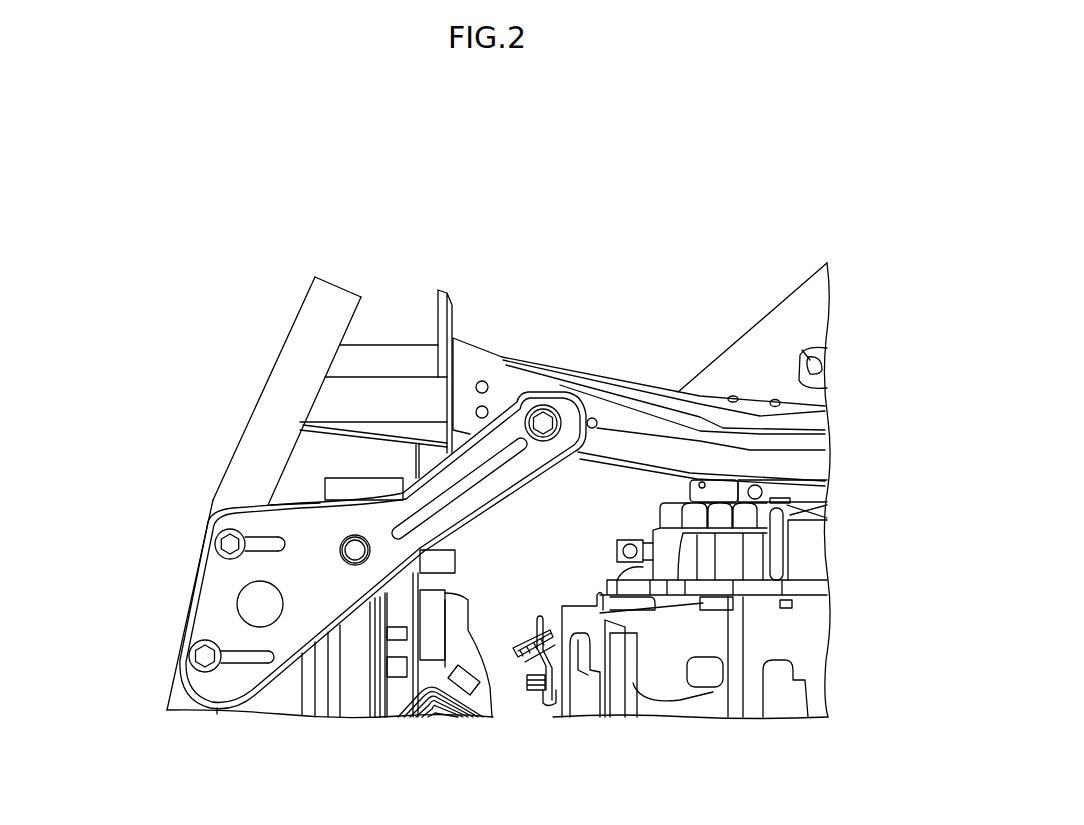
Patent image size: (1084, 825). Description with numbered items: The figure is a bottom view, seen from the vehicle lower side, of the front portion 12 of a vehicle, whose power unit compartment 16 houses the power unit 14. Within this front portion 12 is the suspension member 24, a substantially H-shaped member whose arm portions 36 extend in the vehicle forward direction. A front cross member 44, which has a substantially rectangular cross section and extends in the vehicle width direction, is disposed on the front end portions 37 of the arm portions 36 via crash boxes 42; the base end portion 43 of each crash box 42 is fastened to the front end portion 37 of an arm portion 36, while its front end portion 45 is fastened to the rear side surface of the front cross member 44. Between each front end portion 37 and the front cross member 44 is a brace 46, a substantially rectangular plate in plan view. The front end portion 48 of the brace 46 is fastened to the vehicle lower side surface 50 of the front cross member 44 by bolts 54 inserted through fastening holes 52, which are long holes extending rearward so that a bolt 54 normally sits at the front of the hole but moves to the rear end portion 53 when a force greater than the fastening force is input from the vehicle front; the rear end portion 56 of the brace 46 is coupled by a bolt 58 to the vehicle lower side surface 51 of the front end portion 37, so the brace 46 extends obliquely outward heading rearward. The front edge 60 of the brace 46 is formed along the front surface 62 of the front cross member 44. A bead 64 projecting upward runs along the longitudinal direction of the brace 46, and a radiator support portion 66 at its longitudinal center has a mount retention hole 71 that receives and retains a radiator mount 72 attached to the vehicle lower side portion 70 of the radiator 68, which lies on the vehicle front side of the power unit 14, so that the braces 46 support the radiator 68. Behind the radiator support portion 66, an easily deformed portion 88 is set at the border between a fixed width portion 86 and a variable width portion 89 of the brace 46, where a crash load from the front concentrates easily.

The front portion 12 is at (460, 166).
The power unit 14 is at (682, 703).
The power unit compartment 16 is at (520, 697).
The suspension member 24 is at (610, 398).
The arm portion 36 is at (664, 334).
The front end portion 37 is at (518, 382).
The crash box 42 is at (365, 358).
The base end portion 43 is at (433, 355).
The front cross member 44 is at (267, 391).
The front end portion 45 is at (337, 365).
The brace 46 is at (494, 436).
The front end portion 48 is at (258, 580).
The vehicle lower side surface 50 is at (247, 477).
The vehicle lower side surface 51 is at (590, 390).
The fastening hole 52 is at (260, 547).
The rear end portion 53 is at (285, 540).
The bolt 54 is at (205, 533).
The rear end portion 56 is at (568, 418).
The bolt 58 is at (540, 405).
The front edge 60 is at (180, 612).
The front surface 62 is at (167, 710).
The bead 64 is at (450, 498).
The radiator support portion 66 is at (341, 544).
The radiator 68 is at (352, 705).
The vehicle lower side portion 70 is at (357, 633).
The mount retention hole 71 is at (352, 537).
The radiator mount 72 is at (370, 549).
The fixed width portion 86 is at (483, 490).
The easily deformed portion 88 is at (390, 478).
The variable width portion 89 is at (293, 498).